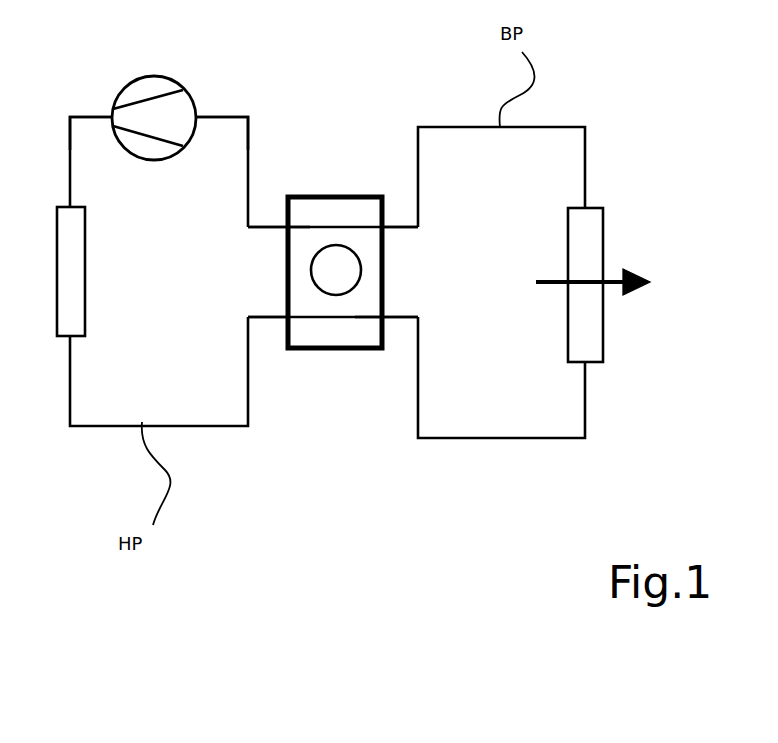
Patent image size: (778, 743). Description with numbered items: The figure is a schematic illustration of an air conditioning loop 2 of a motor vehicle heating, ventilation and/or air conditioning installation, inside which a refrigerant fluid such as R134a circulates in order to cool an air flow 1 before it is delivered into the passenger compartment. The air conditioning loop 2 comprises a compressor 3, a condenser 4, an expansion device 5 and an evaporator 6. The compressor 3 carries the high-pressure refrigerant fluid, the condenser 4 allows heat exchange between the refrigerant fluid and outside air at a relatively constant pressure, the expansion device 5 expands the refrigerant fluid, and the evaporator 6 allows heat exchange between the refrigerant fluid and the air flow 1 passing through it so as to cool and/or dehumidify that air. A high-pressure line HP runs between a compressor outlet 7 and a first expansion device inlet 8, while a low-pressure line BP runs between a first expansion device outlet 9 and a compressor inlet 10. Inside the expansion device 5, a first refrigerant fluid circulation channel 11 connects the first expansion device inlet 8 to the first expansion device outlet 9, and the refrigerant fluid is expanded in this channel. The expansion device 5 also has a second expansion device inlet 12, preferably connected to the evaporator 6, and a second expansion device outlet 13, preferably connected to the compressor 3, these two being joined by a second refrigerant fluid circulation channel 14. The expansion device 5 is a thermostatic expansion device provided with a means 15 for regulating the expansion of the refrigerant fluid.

The air flow 1 is at (550, 285).
The air conditioning loop 2 is at (328, 108).
The compressor 3 is at (157, 77).
The condenser 4 is at (71, 271).
The expansion device 5 is at (327, 352).
The evaporator 6 is at (585, 285).
The compressor outlet 7 is at (112, 116).
The first expansion device inlet 8 is at (288, 317).
The first expansion device outlet 9 is at (385, 318).
The compressor inlet 10 is at (197, 113).
The first refrigerant fluid circulation channel 11 is at (372, 313).
The second expansion device inlet 12 is at (384, 228).
The second expansion device outlet 13 is at (287, 226).
The second refrigerant fluid circulation channel 14 is at (303, 228).
The means for regulating the expansion of the refrigerant fluid 15 is at (336, 270).